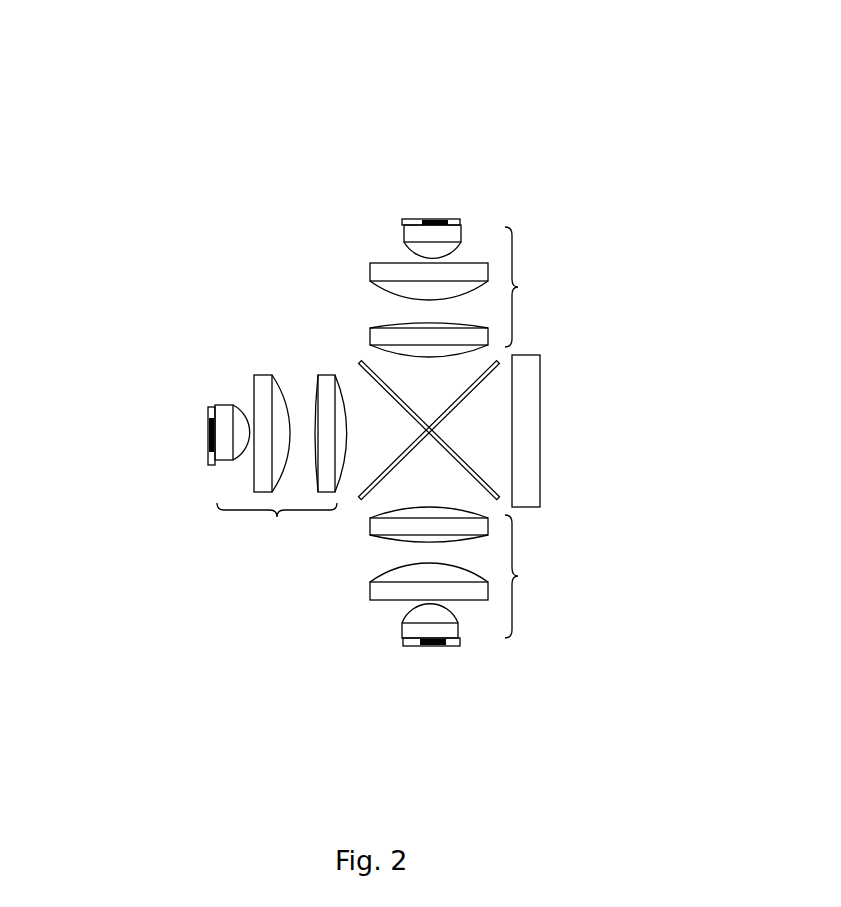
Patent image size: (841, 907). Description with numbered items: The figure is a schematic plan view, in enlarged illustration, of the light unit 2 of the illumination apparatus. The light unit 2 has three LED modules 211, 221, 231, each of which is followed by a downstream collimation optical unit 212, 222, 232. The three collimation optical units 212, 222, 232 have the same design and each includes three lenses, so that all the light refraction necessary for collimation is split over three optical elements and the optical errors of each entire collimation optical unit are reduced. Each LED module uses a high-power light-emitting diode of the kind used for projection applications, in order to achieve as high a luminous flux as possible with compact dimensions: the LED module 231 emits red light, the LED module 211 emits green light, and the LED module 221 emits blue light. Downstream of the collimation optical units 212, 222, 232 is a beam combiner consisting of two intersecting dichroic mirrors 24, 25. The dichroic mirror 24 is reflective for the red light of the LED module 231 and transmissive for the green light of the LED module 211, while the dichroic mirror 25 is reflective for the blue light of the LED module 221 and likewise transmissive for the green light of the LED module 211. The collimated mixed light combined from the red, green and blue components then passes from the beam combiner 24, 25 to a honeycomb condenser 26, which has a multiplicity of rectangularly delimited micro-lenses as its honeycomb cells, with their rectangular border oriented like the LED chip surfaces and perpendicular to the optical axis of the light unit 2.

The light unit 2 is at (520, 107).
The LED module 211 is at (207, 430).
The collimation optical unit 212 is at (282, 462).
The LED module 221 is at (438, 648).
The collimation optical unit 222 is at (468, 572).
The LED module 231 is at (422, 222).
The collimation optical unit 232 is at (467, 292).
The dichroic mirror 24 is at (359, 361).
The dichroic mirror 25 is at (359, 499).
The honeycomb condenser 26 is at (540, 433).